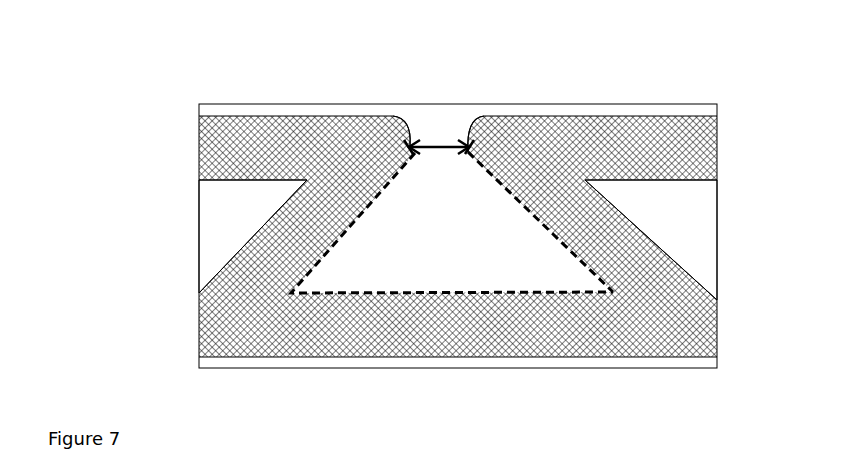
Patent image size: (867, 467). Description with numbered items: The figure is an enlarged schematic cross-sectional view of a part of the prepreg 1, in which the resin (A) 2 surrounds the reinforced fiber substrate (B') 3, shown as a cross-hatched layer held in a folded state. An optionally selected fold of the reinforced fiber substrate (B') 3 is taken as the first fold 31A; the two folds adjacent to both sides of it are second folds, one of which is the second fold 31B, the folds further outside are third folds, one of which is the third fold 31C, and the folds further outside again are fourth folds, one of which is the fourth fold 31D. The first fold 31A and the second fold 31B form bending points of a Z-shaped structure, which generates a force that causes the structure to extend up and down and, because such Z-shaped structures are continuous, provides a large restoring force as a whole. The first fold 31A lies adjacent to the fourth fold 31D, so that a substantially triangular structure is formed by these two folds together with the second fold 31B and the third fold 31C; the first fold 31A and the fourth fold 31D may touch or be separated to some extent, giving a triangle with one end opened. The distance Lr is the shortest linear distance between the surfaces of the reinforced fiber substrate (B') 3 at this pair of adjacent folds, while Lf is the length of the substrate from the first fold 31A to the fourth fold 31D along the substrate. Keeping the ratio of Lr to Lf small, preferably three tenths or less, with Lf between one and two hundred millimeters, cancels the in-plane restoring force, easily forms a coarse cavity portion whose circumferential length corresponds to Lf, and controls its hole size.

The prepreg 1 is at (143, 177).
The resin (A) 2 is at (213, 248).
The reinforced fiber substrate (B') 3 is at (253, 160).
The first fold 31A is at (386, 135).
The second fold 31B is at (205, 325).
The third fold 31C is at (697, 325).
The fourth fold 31D is at (490, 132).
The linear distance between first fold and fourth fold Lr is at (445, 130).
The distance along reinforced fiber substrate between first fold and fourth fold Lf is at (578, 252).